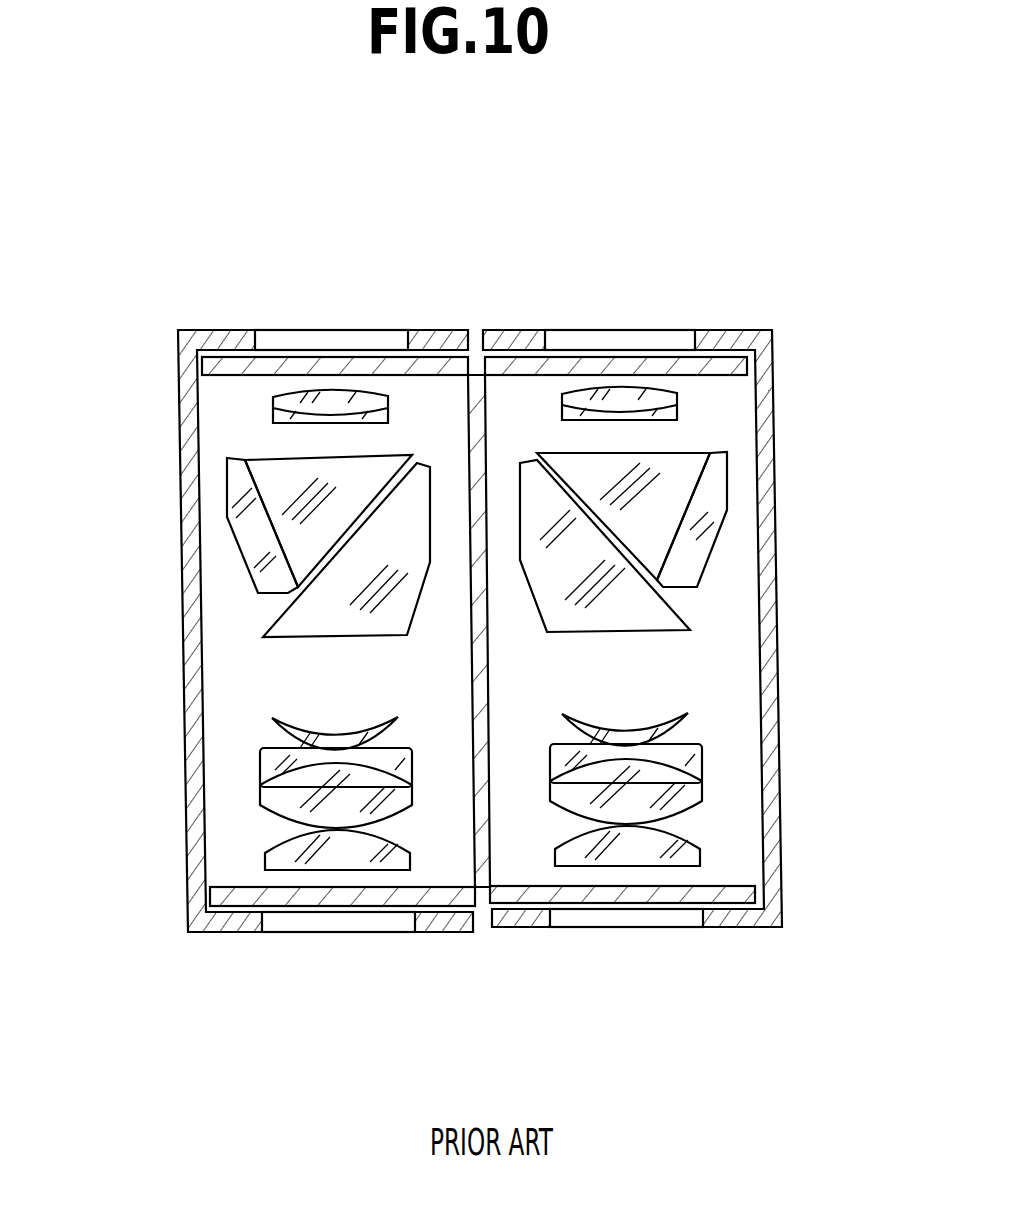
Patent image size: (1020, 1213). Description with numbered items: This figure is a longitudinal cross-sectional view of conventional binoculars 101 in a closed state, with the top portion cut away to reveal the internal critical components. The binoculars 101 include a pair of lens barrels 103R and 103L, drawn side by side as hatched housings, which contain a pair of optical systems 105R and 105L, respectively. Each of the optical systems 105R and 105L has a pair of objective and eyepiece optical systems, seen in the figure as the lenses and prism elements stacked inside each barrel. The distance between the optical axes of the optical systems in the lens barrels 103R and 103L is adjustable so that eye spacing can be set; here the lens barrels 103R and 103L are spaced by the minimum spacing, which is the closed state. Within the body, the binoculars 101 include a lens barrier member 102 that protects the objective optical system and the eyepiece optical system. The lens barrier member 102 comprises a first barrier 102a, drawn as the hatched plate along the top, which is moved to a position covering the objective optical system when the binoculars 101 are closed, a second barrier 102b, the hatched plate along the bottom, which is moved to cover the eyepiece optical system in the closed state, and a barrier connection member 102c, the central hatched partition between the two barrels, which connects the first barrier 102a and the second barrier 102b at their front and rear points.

The binoculars 101 is at (485, 611).
The lens barrier member 102 is at (478, 611).
The first barrier 102a is at (671, 356).
The second barrier 102b is at (628, 903).
The barrier connection member 102c is at (490, 667).
The lens barrel 103L is at (180, 456).
The lens barrel 103R is at (774, 436).
The optical system 105L is at (258, 676).
The optical system 105R is at (713, 663).